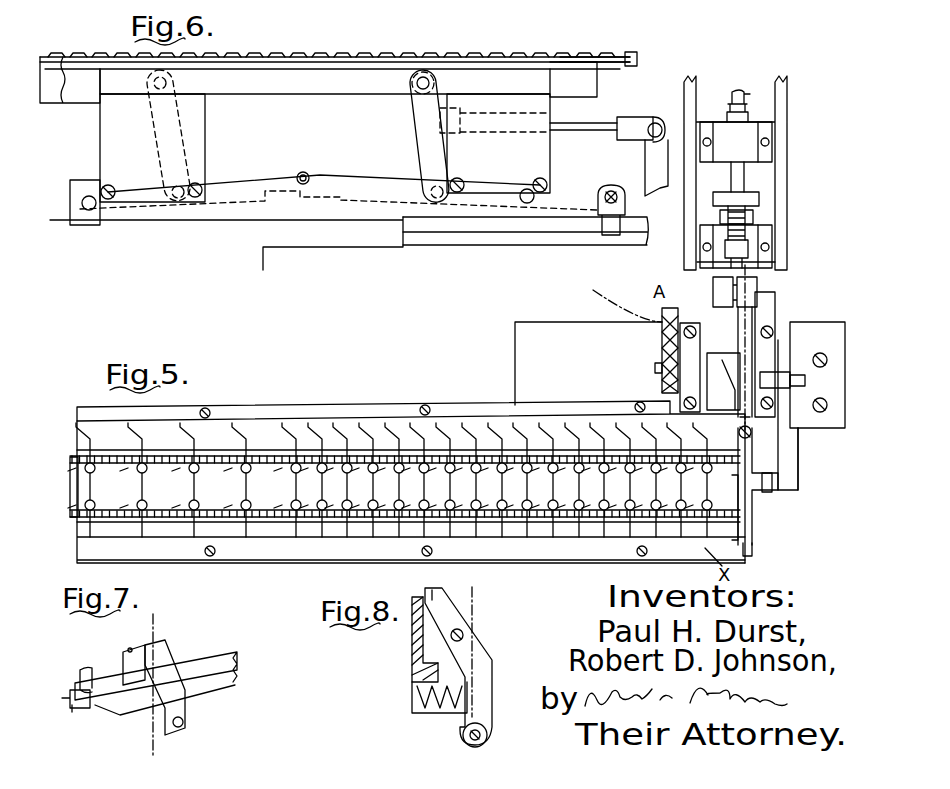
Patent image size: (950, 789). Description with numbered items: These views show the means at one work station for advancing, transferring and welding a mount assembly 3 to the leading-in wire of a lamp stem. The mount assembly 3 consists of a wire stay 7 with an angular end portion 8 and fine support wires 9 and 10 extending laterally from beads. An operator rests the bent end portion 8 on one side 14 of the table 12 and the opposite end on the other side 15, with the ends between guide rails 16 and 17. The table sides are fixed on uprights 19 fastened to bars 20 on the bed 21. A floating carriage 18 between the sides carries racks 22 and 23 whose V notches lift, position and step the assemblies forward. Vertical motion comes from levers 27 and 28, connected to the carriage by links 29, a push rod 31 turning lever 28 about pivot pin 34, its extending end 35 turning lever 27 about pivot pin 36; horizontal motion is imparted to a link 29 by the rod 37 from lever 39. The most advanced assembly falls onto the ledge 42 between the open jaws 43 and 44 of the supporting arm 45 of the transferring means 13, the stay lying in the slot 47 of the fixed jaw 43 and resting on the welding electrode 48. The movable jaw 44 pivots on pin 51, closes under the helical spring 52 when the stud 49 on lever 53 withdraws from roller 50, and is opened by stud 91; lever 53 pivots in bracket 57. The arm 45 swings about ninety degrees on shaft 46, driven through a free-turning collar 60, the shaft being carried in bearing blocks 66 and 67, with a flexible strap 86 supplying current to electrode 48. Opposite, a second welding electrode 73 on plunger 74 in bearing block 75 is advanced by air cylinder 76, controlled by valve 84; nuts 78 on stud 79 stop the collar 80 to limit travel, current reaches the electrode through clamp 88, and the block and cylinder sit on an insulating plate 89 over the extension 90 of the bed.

In FIG. 5, the mount assembly 3 is at (372, 429).
In FIG. 5, the wire stay 7 is at (300, 562).
In FIG. 5, the end portion of the stay 8 is at (290, 423).
In FIG. 7, the end portion of the stay 8 is at (160, 617).
In FIG. 5, the support wire 9 is at (285, 476).
In FIG. 5, the support wire 10 is at (292, 511).
In FIG. 5, the table 12 is at (235, 399).
In FIG. 5, the transferring means 13 is at (785, 502).
In FIG. 5, the side of the table 14 is at (268, 419).
In FIG. 6, the side of the table 15 is at (604, 56).
In FIG. 5, the side of the table 15 is at (309, 534).
In FIG. 5, the guide rail 16 is at (306, 419).
In FIG. 6, the guide rail 17 is at (631, 52).
In FIG. 5, the guide rail 17 is at (297, 534).
In FIG. 6, the floating carriage 18 is at (313, 96).
In FIG. 5, the floating carriage 18 is at (72, 498).
In FIG. 6, the upright 19 is at (205, 133).
In FIG. 6, the bar 20 is at (383, 218).
In FIG. 6, the bed 21 is at (262, 249).
In FIG. 5, the bed 21 is at (514, 352).
In FIG. 5, the rack 22 is at (440, 452).
In FIG. 6, the rack 23 is at (370, 54).
In FIG. 5, the rack 23 is at (490, 521).
In FIG. 6, the lever 27 is at (155, 213).
In FIG. 6, the lever 28 is at (475, 210).
In FIG. 6, the link 29 is at (190, 158).
In FIG. 6, the push rod 31 is at (600, 234).
In FIG. 6, the pivot pin 34 is at (527, 204).
In FIG. 6, the extending end of lever 28 35 is at (323, 176).
In FIG. 6, the pivot pin 36 is at (86, 214).
In FIG. 6, the rod 37 is at (598, 127).
In FIG. 6, the lever 39 is at (647, 171).
In FIG. 5, the ledge 42 is at (750, 434).
In FIG. 5, the fixed jaw 43 is at (748, 512).
In FIG. 7, the fixed jaw 43 is at (122, 661).
In FIG. 8, the fixed jaw 43 is at (412, 626).
In FIG. 5, the movable jaw 44 is at (754, 500).
In FIG. 7, the movable jaw 44 is at (170, 651).
In FIG. 8, the movable jaw 44 is at (455, 616).
In FIG. 5, the supporting arm 45 is at (780, 469).
In FIG. 7, the supporting arm 45 is at (235, 689).
In FIG. 8, the supporting arm 45 is at (422, 711).
In FIG. 5, the supporting shaft 46 is at (772, 350).
In FIG. 7, the slot 47 is at (128, 648).
In FIG. 8, the slot 47 is at (425, 596).
In FIG. 5, the welding electrode 48 is at (752, 548).
In FIG. 7, the welding electrode 48 is at (80, 677).
In FIG. 5, the stud 49 is at (775, 491).
In FIG. 7, the roller 50 is at (186, 721).
In FIG. 8, the roller 50 is at (486, 729).
In FIG. 8, the pin 51 is at (465, 636).
In FIG. 8, the helical spring 52 is at (445, 713).
In FIG. 5, the lever 53 is at (800, 437).
In FIG. 5, the bracket 57 is at (830, 340).
In FIG. 5, the collar 60 is at (705, 351).
In FIG. 5, the bearing block 66 is at (770, 372).
In FIG. 5, the bearing block 67 is at (685, 353).
In FIG. 5, the second welding electrode 73 is at (740, 321).
In FIG. 5, the plunger 74 is at (776, 313).
In FIG. 5, the bearing block 75 is at (773, 263).
In FIG. 5, the air cylinder 76 is at (745, 124).
In FIG. 5, the nuts 78 is at (748, 223).
In FIG. 5, the stud 79 is at (724, 231).
In FIG. 5, the collar 80 is at (760, 198).
In FIG. 5, the valve 84 is at (743, 92).
In FIG. 5, the flexible strap 86 is at (660, 320).
In FIG. 5, the clamp 88 is at (760, 285).
In FIG. 5, the plate 89 is at (789, 170).
In FIG. 5, the extension of the base 90 is at (789, 104).
In FIG. 5, the stud 91 is at (805, 372).